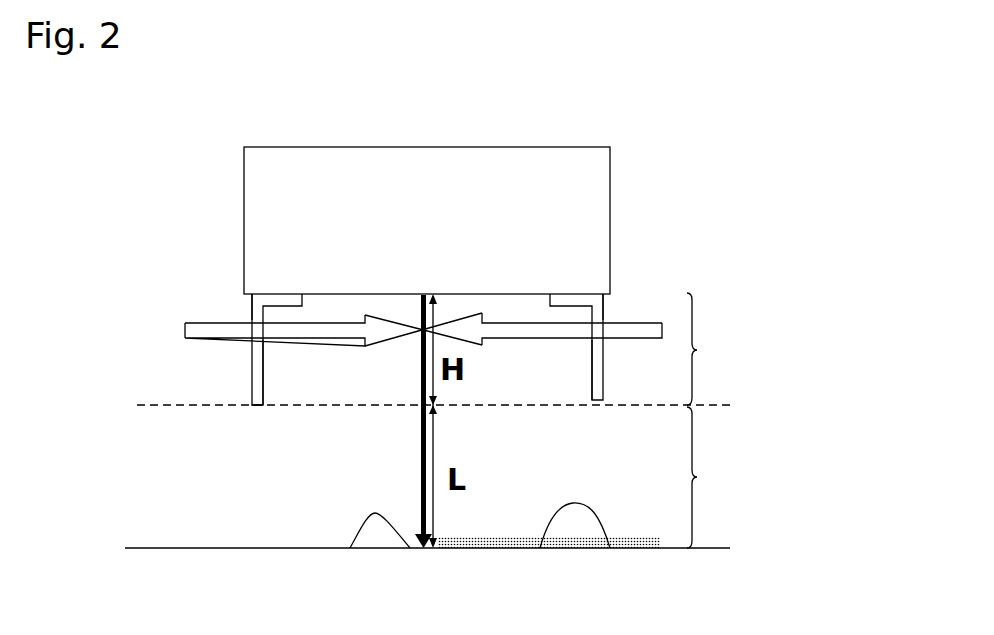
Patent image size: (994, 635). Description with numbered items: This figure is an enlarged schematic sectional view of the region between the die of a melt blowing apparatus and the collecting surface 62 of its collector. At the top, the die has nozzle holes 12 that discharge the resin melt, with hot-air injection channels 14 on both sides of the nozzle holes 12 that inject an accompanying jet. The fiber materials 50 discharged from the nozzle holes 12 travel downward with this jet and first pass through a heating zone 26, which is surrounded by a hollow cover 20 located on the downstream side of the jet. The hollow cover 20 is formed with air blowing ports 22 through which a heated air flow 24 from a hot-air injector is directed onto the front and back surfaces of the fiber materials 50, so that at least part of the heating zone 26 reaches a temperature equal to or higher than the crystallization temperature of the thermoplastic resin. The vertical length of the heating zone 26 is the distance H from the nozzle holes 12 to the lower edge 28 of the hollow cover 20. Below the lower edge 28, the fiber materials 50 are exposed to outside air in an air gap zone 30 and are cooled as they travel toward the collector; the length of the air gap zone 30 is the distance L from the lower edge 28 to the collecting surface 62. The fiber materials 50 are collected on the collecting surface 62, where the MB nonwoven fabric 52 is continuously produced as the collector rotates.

The nozzle holes 12 is at (422, 296).
The hot-air injection channels 14 is at (397, 293).
The hollow cover 20 is at (252, 377).
The air blowing ports 22 is at (252, 320).
The heated air flow 24 is at (273, 338).
The heating zone 26 is at (716, 349).
The lower edge of the hollow cover 28 is at (252, 408).
The air gap zone 30 is at (716, 477).
The fiber materials 50 is at (418, 465).
The MB nonwoven fabric 52 is at (610, 548).
The collecting surface 62 is at (350, 548).